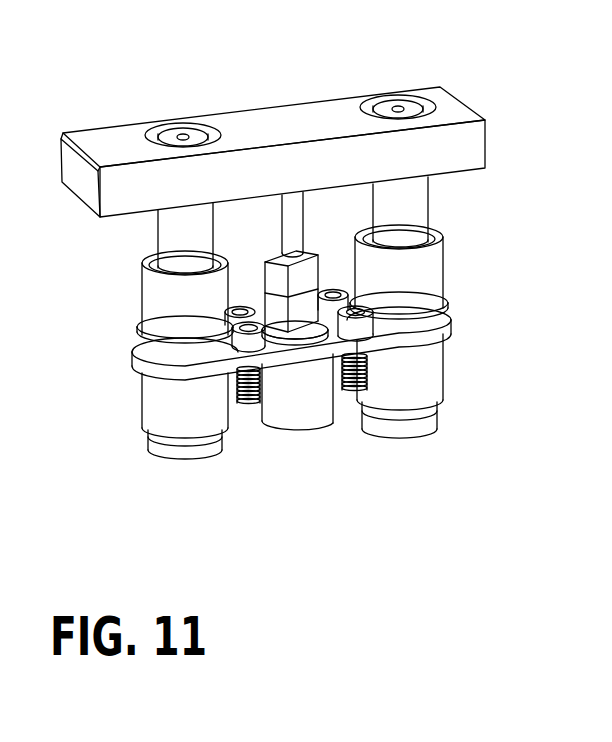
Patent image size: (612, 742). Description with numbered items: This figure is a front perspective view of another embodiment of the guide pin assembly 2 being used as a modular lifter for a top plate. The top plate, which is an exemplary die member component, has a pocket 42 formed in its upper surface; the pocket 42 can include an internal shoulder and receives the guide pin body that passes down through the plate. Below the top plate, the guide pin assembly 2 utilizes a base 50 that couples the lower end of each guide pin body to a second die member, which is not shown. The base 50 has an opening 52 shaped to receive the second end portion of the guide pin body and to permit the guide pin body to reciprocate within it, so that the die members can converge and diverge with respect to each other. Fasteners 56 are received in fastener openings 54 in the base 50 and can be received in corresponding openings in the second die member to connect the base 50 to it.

The guide pin assembly 2 is at (150, 228).
The pocket 42 is at (158, 139).
The base 50 is at (140, 365).
The opening 52 is at (142, 266).
The fastener openings 54 is at (368, 338).
The fasteners 56 is at (352, 330).